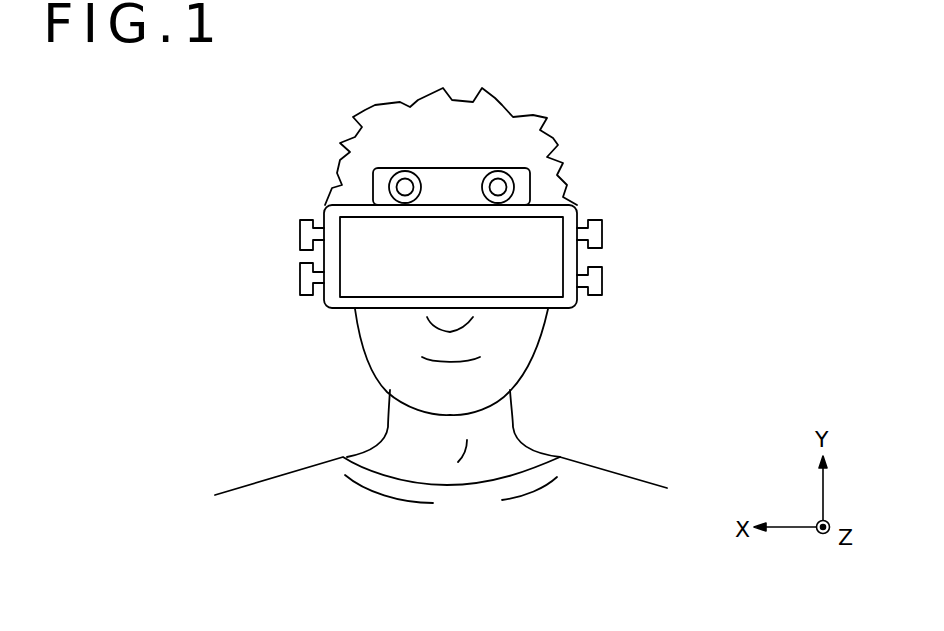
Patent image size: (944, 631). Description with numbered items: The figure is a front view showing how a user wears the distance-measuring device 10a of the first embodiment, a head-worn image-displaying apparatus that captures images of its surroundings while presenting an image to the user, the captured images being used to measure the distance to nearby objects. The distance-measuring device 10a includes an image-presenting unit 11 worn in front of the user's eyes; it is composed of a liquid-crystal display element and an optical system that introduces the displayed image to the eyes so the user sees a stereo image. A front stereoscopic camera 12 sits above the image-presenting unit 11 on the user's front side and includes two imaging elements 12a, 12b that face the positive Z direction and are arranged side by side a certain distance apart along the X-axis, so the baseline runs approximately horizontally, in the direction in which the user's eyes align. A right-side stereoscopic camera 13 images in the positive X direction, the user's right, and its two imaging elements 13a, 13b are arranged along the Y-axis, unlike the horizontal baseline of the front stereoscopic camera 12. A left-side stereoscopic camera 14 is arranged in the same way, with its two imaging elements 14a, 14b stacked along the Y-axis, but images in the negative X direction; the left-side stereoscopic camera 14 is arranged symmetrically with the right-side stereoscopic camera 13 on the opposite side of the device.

The distance-measuring device 10a is at (615, 170).
The image-presenting unit 11 is at (353, 277).
The front stereoscopic camera 12 is at (532, 47).
The imaging element 12a is at (390, 172).
The imaging element 12b is at (482, 172).
The right-side stereoscopic camera 13 is at (214, 217).
The imaging element 13a is at (298, 233).
The imaging element 13b is at (298, 281).
The left-side stereoscopic camera 14 is at (685, 217).
The imaging element 14a is at (603, 228).
The imaging element 14b is at (603, 276).